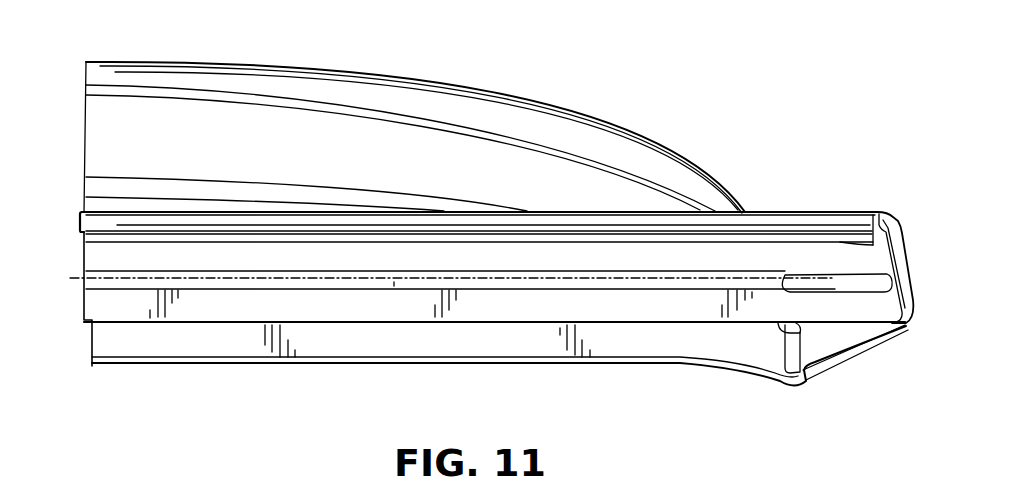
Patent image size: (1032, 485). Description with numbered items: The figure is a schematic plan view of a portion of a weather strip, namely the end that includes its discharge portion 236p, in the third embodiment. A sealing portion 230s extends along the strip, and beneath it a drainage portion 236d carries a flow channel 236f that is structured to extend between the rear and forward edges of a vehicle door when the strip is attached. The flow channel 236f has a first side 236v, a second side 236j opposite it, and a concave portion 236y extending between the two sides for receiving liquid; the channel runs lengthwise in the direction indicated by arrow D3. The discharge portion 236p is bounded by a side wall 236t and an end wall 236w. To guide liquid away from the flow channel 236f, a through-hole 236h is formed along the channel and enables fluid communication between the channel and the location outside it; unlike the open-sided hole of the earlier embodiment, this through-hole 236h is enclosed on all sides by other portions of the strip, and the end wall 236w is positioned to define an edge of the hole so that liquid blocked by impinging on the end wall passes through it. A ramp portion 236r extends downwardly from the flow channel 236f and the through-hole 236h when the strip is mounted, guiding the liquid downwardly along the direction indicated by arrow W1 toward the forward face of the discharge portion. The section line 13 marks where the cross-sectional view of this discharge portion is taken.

The sealing portion 230s is at (465, 132).
The flow channel 236f is at (227, 262).
The first side of flow channel 236v is at (332, 250).
The side wall 236t is at (533, 218).
The through-hole 236h is at (860, 287).
The discharge portion 236p is at (850, 257).
The end wall 236w is at (897, 241).
The concave portion of flow channel 236y is at (102, 270).
The direction D3 is at (18, 297).
The drainage portion 236d is at (90, 306).
The second side of flow channel 236j is at (210, 302).
The arrow indicating liquid flow direction W1 is at (394, 282).
The ramp portion 236r is at (791, 290).
The section line 13 is at (886, 432).